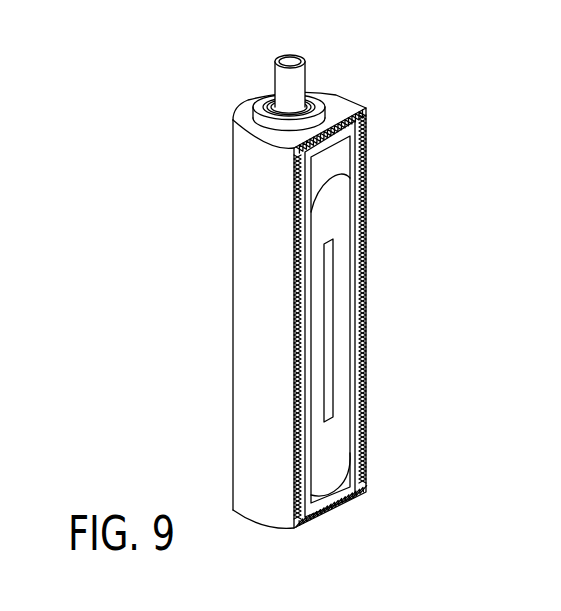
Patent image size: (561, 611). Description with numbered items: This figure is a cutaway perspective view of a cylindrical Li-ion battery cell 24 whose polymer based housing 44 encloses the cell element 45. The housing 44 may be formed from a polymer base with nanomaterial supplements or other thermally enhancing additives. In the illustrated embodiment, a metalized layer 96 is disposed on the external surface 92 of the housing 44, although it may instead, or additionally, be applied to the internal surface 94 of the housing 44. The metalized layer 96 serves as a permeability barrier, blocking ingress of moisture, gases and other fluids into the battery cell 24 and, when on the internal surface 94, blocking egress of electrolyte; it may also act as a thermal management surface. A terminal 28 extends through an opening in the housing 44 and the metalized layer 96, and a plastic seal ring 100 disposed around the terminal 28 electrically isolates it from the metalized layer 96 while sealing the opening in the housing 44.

The Li-ion battery cell 24 is at (176, 87).
The terminal 28 is at (290, 60).
The plastic seal ring 100 is at (265, 118).
The metalized layer 96 is at (296, 199).
The housing 44 is at (307, 250).
The internal surface 94 is at (309, 360).
The external surface 92 is at (302, 396).
The cell element 45 is at (340, 313).